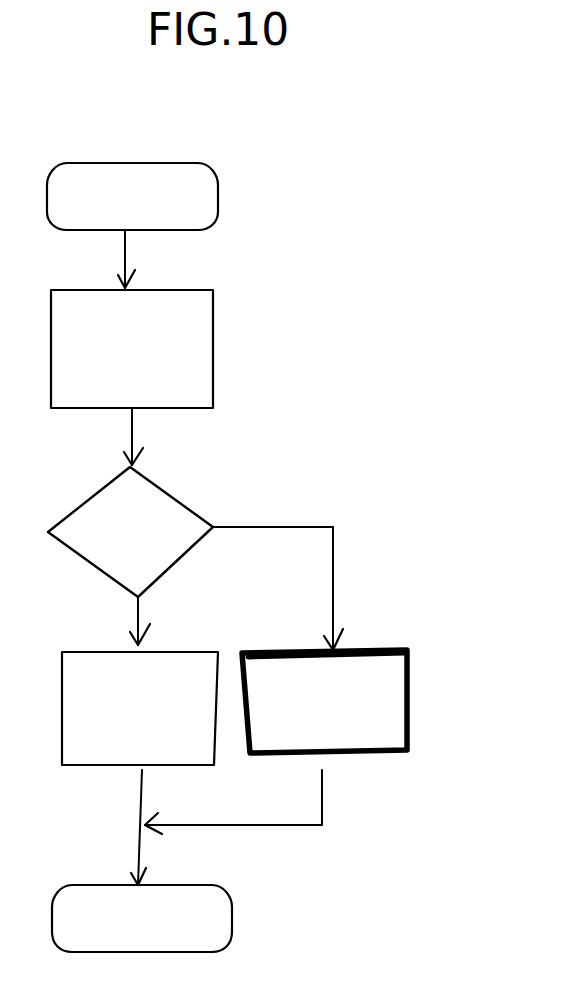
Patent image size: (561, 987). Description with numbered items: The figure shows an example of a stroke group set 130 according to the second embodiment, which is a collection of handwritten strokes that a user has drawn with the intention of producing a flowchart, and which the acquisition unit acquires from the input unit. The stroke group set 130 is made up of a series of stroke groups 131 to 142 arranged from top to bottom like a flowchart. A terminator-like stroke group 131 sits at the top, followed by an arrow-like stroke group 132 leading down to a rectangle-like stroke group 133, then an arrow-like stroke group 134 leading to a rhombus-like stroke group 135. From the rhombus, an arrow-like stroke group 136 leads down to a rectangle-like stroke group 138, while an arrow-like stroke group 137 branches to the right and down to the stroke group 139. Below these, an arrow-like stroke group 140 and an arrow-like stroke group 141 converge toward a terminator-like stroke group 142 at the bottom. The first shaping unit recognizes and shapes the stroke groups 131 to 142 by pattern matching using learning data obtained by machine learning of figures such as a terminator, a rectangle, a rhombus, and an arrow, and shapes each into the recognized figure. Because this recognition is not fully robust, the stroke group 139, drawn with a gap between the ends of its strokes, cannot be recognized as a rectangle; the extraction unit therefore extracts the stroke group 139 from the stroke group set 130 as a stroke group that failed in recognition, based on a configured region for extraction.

The stroke group set 130 is at (332, 173).
The stroke group 131 is at (219, 193).
The stroke group 132 is at (127, 250).
The stroke group 133 is at (214, 345).
The stroke group 134 is at (134, 425).
The stroke group 135 is at (167, 492).
The stroke group 136 is at (140, 610).
The stroke group 137 is at (334, 575).
The stroke group 138 is at (188, 650).
The stroke group 139 is at (362, 650).
The stroke group 140 is at (142, 792).
The stroke group 141 is at (324, 790).
The stroke group 142 is at (233, 918).